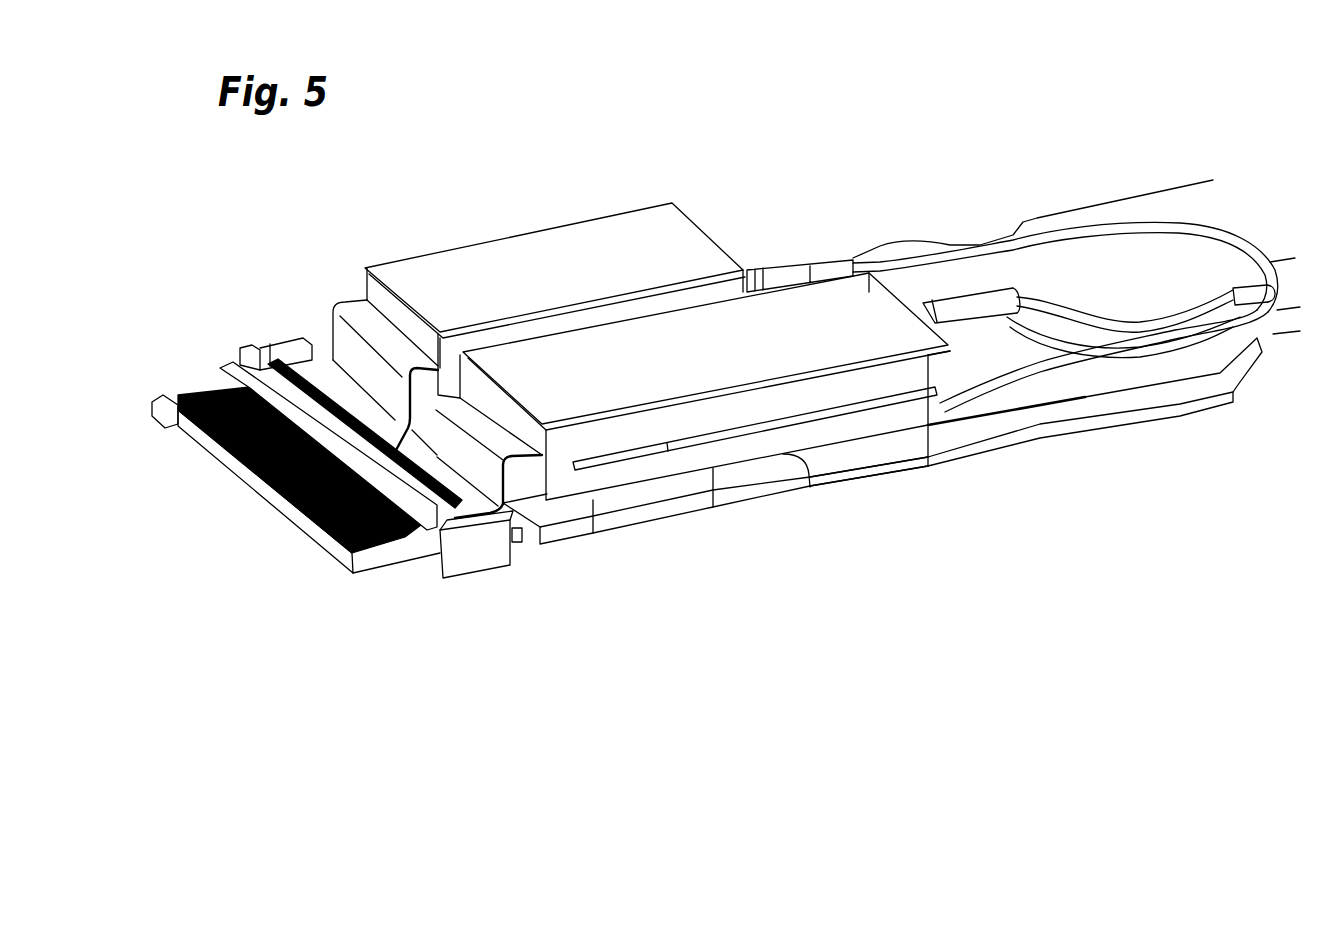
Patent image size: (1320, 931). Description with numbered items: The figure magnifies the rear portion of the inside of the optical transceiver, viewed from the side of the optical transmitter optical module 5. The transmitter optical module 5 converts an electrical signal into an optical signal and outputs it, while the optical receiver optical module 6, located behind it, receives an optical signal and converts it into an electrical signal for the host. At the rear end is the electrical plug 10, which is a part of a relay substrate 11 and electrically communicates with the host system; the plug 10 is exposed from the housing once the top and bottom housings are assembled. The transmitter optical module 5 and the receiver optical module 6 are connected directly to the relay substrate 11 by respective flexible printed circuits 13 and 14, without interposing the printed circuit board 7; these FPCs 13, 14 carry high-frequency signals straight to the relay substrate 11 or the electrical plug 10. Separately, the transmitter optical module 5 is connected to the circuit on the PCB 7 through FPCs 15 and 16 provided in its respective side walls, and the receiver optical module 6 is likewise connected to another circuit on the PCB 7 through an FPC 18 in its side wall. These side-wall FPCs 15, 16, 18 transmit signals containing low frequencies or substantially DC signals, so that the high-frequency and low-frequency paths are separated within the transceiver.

The optical transmitter optical module 5 is at (725, 367).
The optical receiver optical module 6 is at (577, 243).
The printed circuit board 7 is at (1060, 412).
The electrical plug 10 is at (249, 352).
The relay substrate 11 is at (517, 542).
The flexible printed circuit 13 is at (478, 510).
The flexible printed circuit 14 is at (337, 318).
The flexible printed circuit 15 is at (872, 445).
The flexible printed circuit 16 is at (652, 494).
The flexible printed circuit 18 is at (457, 380).